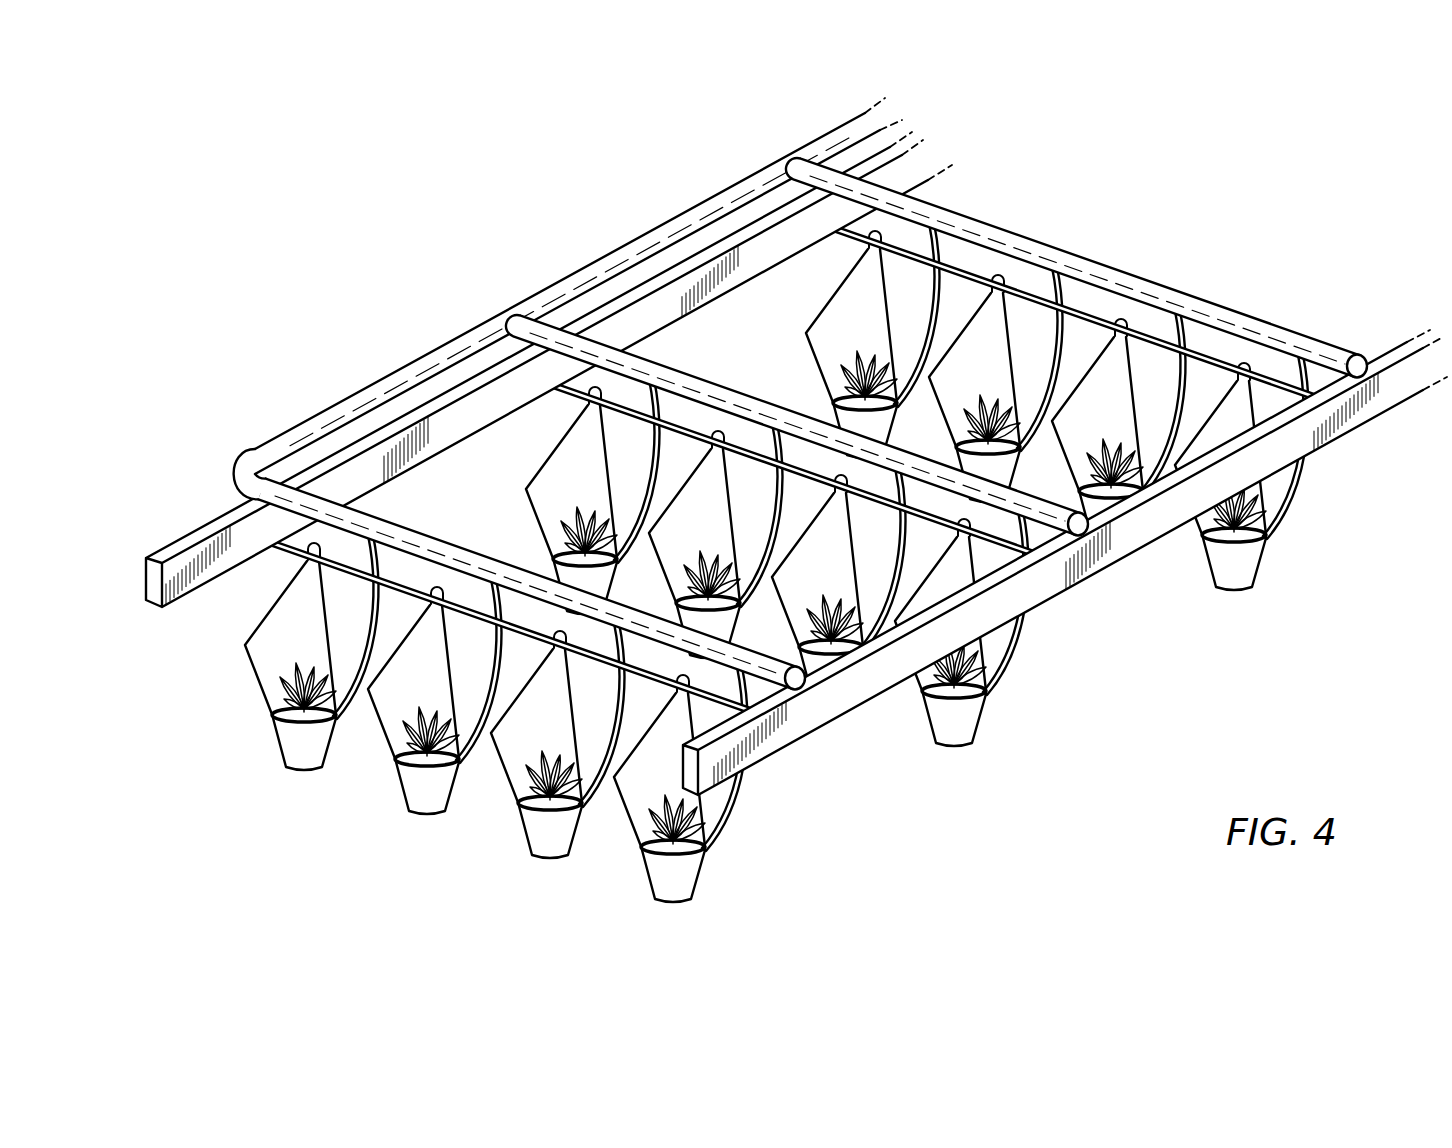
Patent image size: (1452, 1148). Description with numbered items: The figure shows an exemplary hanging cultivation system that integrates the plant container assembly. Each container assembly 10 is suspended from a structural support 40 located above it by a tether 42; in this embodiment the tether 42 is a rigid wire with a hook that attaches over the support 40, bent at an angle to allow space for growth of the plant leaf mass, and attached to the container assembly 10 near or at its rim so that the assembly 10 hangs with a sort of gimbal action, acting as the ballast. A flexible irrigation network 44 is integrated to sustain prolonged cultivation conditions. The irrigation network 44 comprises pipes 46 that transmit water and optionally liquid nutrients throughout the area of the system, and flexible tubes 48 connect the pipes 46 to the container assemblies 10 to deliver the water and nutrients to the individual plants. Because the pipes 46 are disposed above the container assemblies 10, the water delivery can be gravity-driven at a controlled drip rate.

The container assembly 10 is at (255, 763).
The structural support 40 is at (852, 238).
The tether 42 is at (822, 370).
The irrigation network 44 is at (963, 181).
The pipes 46 is at (1300, 338).
The flexible tubes 48 is at (935, 325).